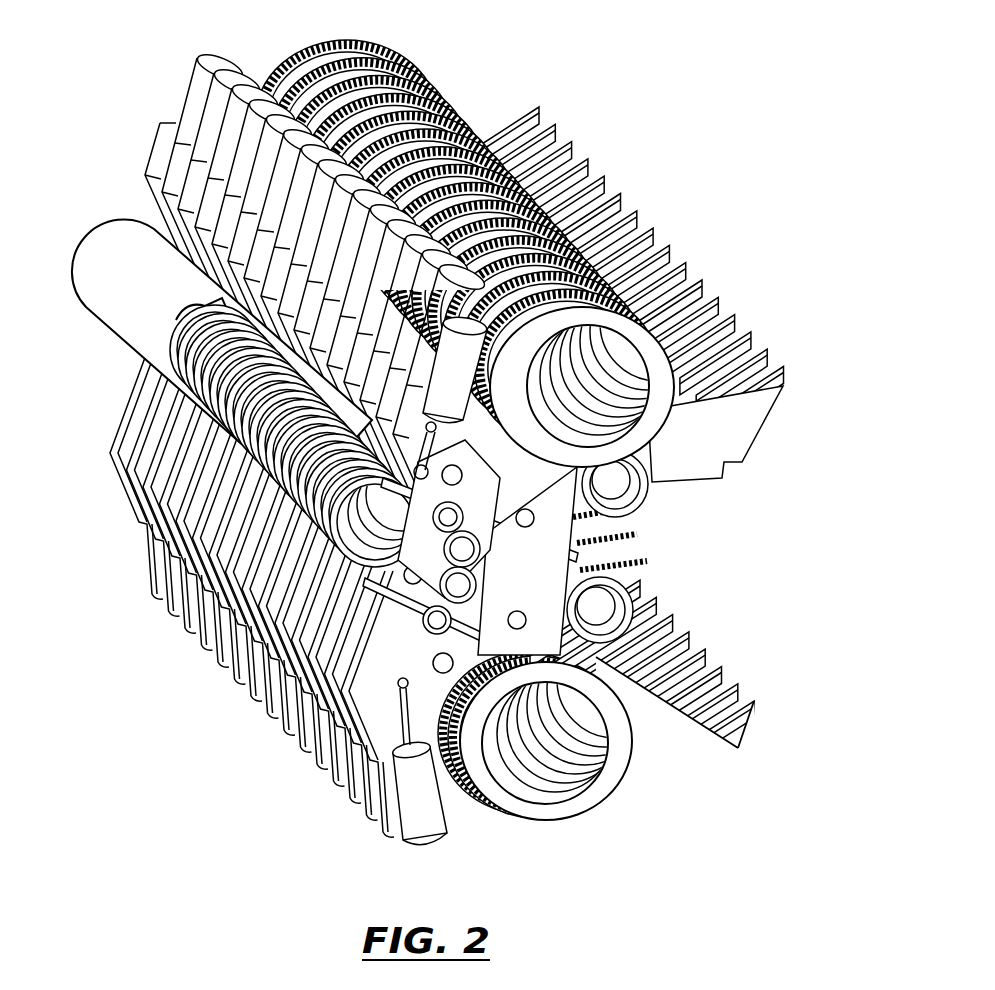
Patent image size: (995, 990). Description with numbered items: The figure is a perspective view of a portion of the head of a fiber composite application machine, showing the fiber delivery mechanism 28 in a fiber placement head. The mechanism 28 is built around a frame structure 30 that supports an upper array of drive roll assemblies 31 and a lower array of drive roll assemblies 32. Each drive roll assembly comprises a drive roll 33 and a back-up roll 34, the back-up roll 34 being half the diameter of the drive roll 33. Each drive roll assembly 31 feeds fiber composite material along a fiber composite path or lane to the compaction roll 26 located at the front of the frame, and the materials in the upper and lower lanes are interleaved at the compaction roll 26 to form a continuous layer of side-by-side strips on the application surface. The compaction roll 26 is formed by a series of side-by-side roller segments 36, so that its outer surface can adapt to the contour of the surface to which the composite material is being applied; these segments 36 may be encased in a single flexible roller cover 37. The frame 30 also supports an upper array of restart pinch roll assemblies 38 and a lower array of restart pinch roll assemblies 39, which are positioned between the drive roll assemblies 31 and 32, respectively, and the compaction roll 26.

The compaction roll 26 is at (120, 374).
The fiber delivery mechanism 28 is at (575, 117).
The frame structure 30 is at (548, 537).
The upper array of drive roll assemblies 31 is at (442, 87).
The lower array of drive roll assemblies 32 is at (626, 766).
The drive roll 33 is at (655, 344).
The back-up roll 34 is at (640, 494).
The roller segments 36 is at (207, 425).
The flexible roller cover 37 is at (110, 231).
The upper array of restart pinch roll assemblies 38 is at (471, 520).
The lower array of restart pinch roll assemblies 39 is at (474, 609).